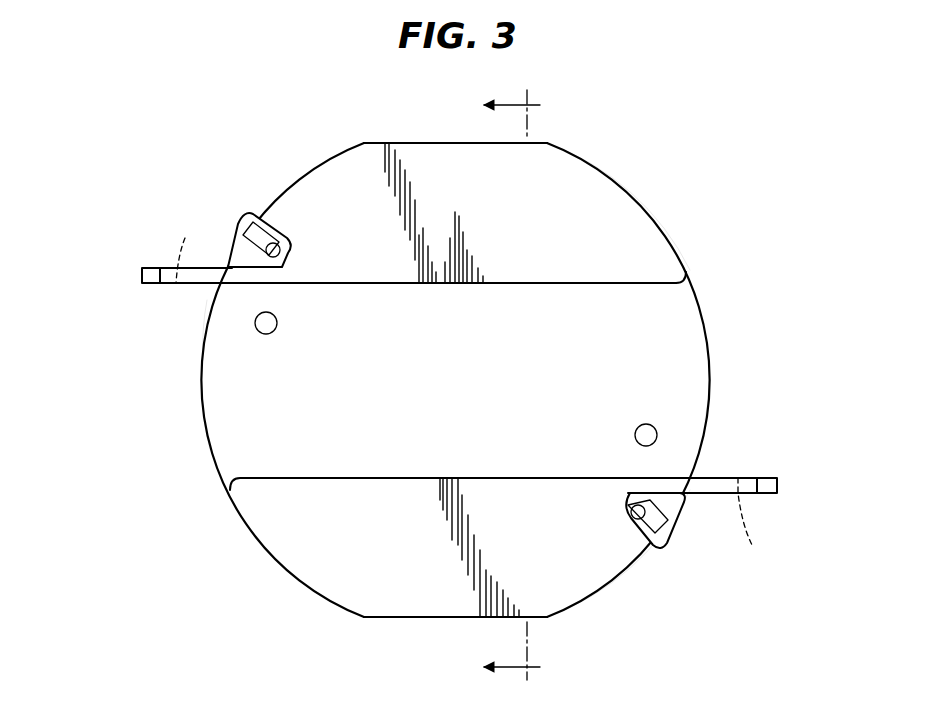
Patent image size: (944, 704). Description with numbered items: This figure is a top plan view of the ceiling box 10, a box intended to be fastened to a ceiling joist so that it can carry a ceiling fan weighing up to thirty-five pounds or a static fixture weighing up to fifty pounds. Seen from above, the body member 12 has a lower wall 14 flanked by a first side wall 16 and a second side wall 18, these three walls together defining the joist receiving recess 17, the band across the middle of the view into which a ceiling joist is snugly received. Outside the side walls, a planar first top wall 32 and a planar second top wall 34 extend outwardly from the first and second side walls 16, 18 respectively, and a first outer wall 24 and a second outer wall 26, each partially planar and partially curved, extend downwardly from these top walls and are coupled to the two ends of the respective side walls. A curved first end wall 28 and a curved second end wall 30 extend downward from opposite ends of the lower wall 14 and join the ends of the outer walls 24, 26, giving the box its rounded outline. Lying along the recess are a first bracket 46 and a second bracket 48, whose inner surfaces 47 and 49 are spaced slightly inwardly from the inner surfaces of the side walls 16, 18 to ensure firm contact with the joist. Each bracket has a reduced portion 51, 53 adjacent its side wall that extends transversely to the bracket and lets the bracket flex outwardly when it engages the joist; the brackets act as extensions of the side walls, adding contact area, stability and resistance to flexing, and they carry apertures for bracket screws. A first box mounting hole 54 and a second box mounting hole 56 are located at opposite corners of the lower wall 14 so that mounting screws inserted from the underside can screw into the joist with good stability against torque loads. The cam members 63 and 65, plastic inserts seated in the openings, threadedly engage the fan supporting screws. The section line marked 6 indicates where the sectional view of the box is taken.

The section line 6- 6 is at (521, 387).
The ceiling box 10 is at (187, 191).
The body member 12 is at (643, 195).
The lower wall 14 is at (648, 351).
The first side wall 16 is at (656, 298).
The joist receiving recess 17 is at (233, 427).
The second side wall 18 is at (565, 476).
The first outer wall 24 is at (418, 142).
The second outer wall 26 is at (418, 619).
The first end wall 28 is at (207, 330).
The second end wall 30 is at (708, 378).
The first top wall 32 is at (585, 172).
The second top wall 34 is at (612, 565).
The first bracket 46 is at (150, 267).
The inner surface of first bracket 47 is at (142, 284).
The second bracket 48 is at (768, 498).
The inner surface of second bracket 49 is at (772, 477).
The reduced portion of first bracket 51 is at (210, 284).
The reduced portion of second bracket 53 is at (705, 477).
The first box mounting hole 54 is at (256, 330).
The second box mounting hole 56 is at (657, 430).
The cam member 63 is at (262, 217).
The cam member 65 is at (676, 506).